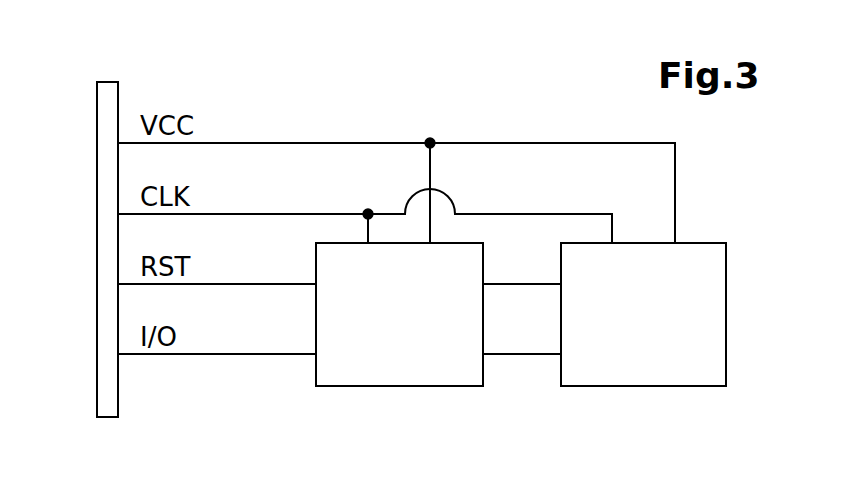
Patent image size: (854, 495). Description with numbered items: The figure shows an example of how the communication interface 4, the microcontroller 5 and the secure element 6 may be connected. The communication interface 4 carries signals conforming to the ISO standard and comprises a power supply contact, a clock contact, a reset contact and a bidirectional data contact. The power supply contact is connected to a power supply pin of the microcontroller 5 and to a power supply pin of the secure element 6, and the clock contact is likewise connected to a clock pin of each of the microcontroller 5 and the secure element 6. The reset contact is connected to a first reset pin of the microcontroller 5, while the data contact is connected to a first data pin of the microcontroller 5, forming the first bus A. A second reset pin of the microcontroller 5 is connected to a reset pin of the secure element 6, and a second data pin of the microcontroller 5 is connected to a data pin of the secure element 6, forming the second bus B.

The communication interface 4 is at (106, 72).
The microcontroller 5 is at (387, 386).
The secure element 6 is at (643, 386).
The first bus A is at (273, 366).
The second bus B is at (539, 366).